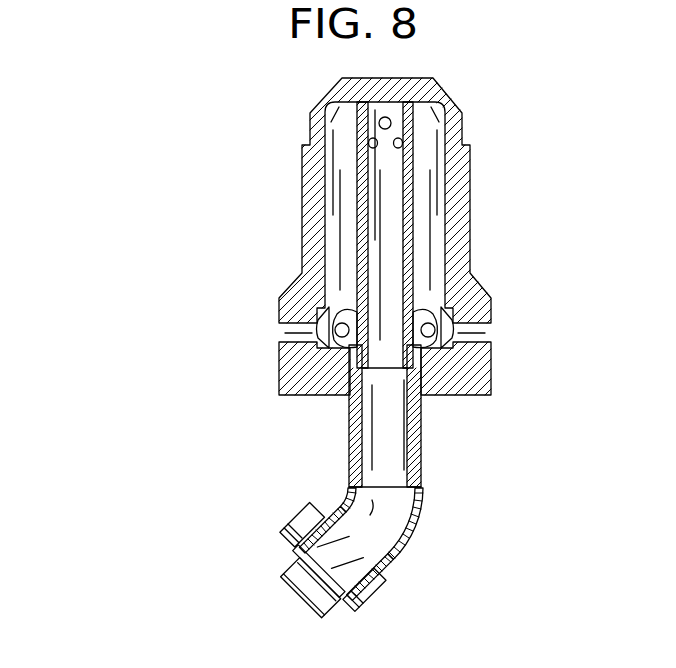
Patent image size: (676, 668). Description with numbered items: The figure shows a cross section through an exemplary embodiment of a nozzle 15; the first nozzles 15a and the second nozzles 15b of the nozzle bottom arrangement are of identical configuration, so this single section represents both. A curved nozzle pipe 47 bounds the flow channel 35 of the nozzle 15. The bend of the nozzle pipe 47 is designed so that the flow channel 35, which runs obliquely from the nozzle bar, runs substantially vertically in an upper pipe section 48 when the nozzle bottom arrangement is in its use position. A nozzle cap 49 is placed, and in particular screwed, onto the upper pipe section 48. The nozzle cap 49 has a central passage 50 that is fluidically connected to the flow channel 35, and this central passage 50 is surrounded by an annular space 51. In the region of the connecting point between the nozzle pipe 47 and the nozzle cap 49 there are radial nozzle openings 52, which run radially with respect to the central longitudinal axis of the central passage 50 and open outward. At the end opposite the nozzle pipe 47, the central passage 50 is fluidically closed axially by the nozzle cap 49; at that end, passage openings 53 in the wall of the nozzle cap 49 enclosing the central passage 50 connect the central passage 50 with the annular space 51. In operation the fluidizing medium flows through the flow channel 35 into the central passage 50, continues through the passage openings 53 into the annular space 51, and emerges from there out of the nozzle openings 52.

The nozzle 15 is at (170, 221).
The first nozzles 15a is at (385, 348).
The second nozzles 15b is at (385, 348).
The flow channel 35 is at (308, 564).
The nozzle pipe 47 is at (417, 440).
The upper pipe section 48 is at (348, 407).
The nozzle cap 49 is at (460, 213).
The central passage 50 is at (393, 170).
The annular space 51 is at (432, 253).
The radial nozzle openings 52 is at (288, 334).
The passage openings 53 is at (357, 126).